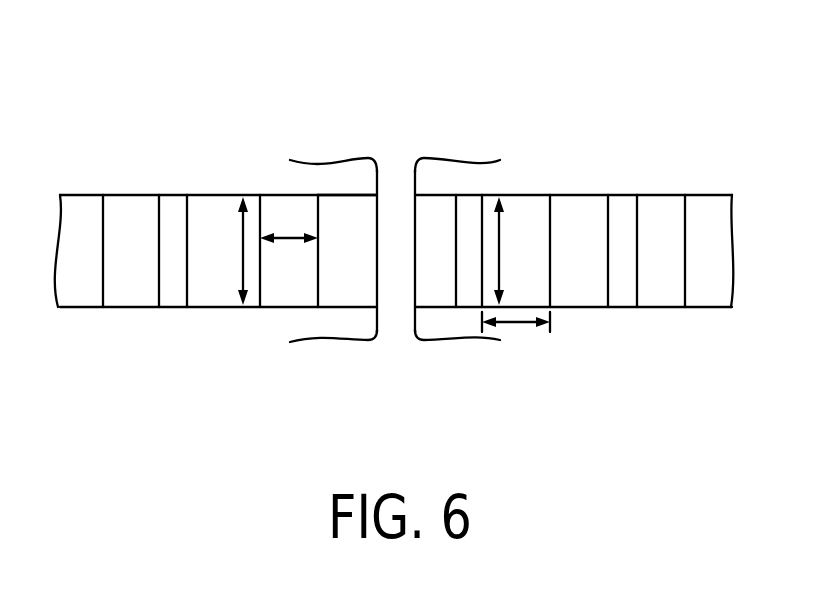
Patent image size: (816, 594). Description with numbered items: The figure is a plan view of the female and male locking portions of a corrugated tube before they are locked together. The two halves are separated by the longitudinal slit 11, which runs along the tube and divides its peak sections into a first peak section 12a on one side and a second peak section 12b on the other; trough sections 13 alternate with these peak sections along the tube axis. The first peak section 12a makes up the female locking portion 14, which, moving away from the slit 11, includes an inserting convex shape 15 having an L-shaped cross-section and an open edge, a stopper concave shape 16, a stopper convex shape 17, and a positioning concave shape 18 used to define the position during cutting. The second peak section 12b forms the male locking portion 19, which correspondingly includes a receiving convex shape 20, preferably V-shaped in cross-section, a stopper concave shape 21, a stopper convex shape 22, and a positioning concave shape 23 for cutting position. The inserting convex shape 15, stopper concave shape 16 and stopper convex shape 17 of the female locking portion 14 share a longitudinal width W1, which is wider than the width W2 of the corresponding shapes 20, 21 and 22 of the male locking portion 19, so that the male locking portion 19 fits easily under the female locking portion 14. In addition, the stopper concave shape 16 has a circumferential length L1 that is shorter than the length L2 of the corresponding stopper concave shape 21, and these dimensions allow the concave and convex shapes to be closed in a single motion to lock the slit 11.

The longitudinal slit 11 is at (403, 293).
The first peak section 12a is at (173, 180).
The second peak section 12b is at (523, 181).
The trough section 13 is at (320, 177).
The female locking portion 14 is at (251, 108).
The inserting convex shape 15 is at (350, 207).
The stopper concave shape 16 is at (293, 207).
The stopper convex shape 17 is at (200, 208).
The positioning concave shape 18 is at (140, 210).
The male locking portion 19 is at (503, 118).
The receiving convex shape 20 is at (472, 208).
The stopper concave shape 21 is at (543, 205).
The stopper convex shape 22 is at (593, 208).
The positioning concave shape 23 is at (650, 208).
The width of female locking portion shapes W1 is at (221, 251).
The length of female stopper concave shape L1 is at (289, 258).
The width of male locking portion shapes W2 is at (501, 250).
The length of male stopper concave shape L2 is at (518, 327).